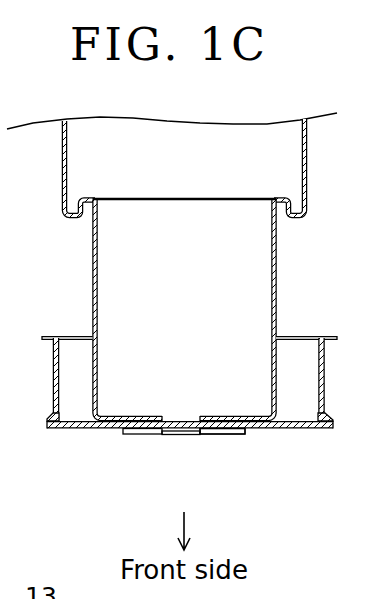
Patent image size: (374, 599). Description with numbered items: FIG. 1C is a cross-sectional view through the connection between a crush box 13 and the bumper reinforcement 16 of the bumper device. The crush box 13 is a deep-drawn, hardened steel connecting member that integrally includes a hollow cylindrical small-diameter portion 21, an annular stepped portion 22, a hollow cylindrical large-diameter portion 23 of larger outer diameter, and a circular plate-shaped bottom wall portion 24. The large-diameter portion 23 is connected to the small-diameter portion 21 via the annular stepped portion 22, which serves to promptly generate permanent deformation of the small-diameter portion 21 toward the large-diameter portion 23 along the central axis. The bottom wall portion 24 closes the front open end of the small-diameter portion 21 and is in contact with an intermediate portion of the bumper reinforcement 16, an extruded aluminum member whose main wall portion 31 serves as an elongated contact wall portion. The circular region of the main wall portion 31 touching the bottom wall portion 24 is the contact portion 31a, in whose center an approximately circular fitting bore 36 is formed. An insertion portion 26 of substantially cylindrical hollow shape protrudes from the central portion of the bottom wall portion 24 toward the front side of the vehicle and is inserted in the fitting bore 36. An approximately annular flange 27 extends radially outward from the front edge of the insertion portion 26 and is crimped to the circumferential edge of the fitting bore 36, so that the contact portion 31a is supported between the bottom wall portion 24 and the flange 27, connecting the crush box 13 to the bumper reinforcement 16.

The crush box 13 is at (362, 165).
The large-diameter portion 23 is at (308, 182).
The annular stepped portion 22 is at (98, 206).
The small-diameter portion 21 is at (278, 270).
The bumper reinforcement 16 is at (55, 377).
The bottom wall portion 24 is at (272, 428).
The insertion portion 26 is at (203, 416).
The flange 27 is at (132, 435).
The fitting bore 36 is at (170, 435).
The contact portion 31a is at (236, 434).
The main wall portion 31 is at (222, 432).